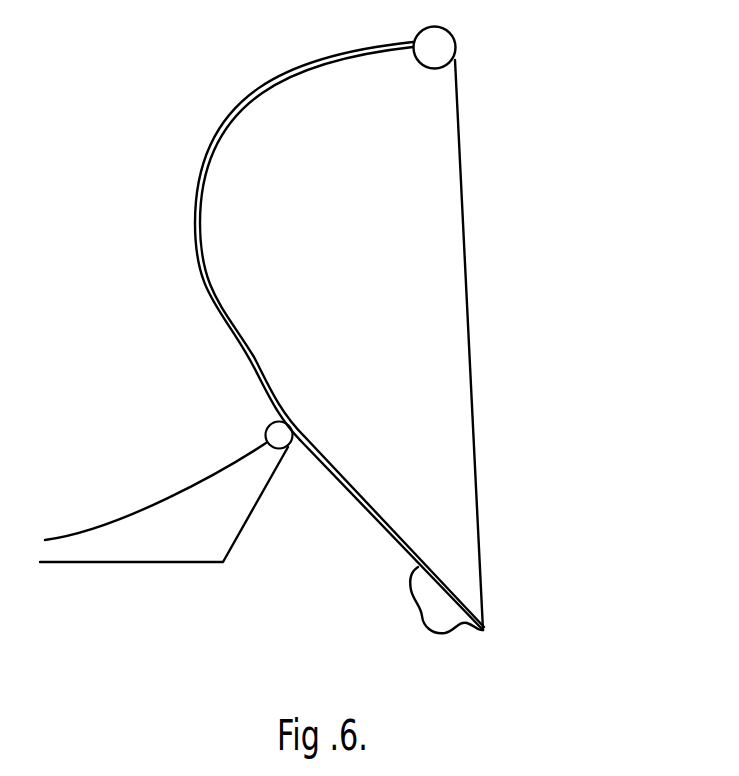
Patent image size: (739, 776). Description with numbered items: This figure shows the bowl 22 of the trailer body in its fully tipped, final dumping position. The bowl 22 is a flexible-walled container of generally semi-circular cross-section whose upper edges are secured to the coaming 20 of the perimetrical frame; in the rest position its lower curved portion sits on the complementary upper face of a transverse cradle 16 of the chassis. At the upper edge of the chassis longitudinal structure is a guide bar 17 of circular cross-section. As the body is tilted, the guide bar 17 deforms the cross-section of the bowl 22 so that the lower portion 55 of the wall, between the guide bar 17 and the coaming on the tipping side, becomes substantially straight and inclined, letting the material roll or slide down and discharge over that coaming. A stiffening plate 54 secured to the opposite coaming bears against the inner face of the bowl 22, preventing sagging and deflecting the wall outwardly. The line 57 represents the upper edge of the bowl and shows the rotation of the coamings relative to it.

The transverse cradle 16 is at (133, 550).
The guide bar 17 is at (283, 435).
The longitudinal coaming 20 is at (437, 600).
The bowl 22 is at (250, 280).
The stiffening plate 54 is at (270, 86).
The lower portion of the wall of the bowl 55 is at (362, 508).
The line representing the upper edge of the bowl 57 is at (472, 232).